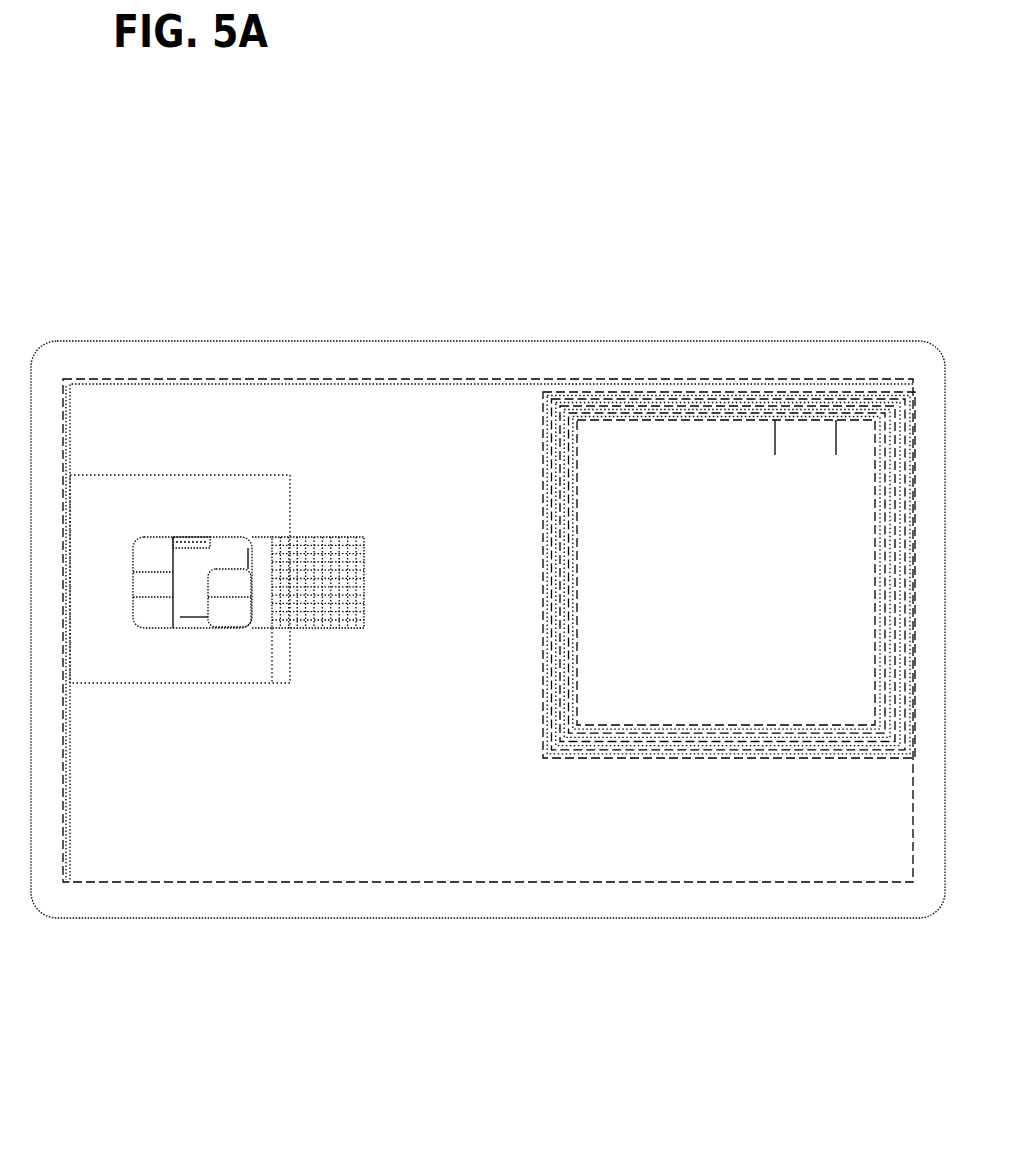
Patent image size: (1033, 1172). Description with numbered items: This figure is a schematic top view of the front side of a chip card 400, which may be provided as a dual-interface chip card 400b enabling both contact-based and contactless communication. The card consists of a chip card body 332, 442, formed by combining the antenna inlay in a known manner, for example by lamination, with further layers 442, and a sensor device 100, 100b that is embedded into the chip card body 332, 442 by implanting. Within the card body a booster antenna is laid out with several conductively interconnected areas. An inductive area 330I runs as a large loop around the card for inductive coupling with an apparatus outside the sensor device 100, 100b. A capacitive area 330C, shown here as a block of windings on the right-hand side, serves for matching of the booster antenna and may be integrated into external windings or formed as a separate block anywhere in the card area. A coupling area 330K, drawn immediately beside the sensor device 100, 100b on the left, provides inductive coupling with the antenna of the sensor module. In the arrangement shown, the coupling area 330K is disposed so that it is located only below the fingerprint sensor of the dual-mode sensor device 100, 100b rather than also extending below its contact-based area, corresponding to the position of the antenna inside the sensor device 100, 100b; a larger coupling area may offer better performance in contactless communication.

The chip card 400 is at (488, 562).
The dual-interface chip card 400b is at (709, 176).
The inductive area 330I is at (335, 380).
The capacitive area 330C is at (710, 387).
The coupling area 330K is at (335, 628).
The sensor device 100 is at (183, 764).
The dual-mode sensor device 100b is at (285, 628).
The chip card body 332 is at (488, 684).
The further layers 442 is at (683, 918).